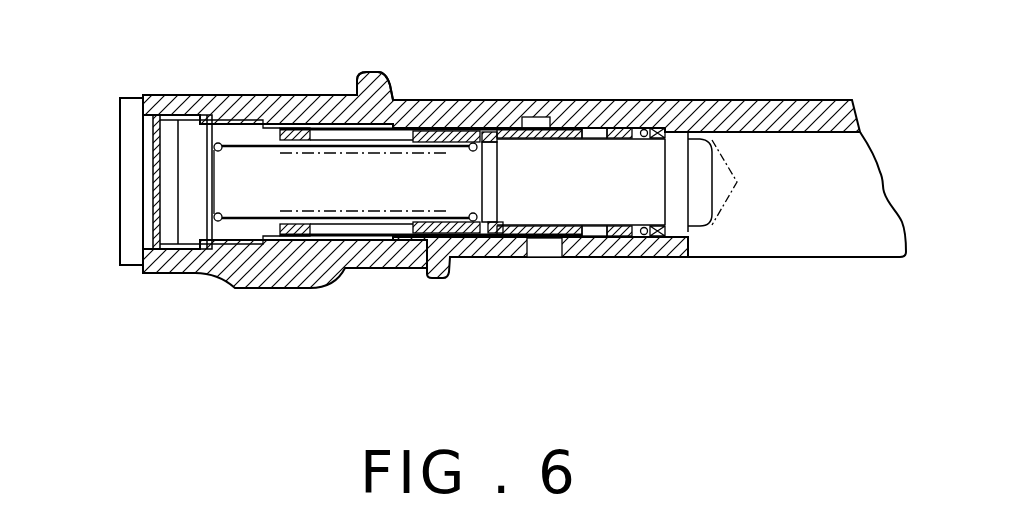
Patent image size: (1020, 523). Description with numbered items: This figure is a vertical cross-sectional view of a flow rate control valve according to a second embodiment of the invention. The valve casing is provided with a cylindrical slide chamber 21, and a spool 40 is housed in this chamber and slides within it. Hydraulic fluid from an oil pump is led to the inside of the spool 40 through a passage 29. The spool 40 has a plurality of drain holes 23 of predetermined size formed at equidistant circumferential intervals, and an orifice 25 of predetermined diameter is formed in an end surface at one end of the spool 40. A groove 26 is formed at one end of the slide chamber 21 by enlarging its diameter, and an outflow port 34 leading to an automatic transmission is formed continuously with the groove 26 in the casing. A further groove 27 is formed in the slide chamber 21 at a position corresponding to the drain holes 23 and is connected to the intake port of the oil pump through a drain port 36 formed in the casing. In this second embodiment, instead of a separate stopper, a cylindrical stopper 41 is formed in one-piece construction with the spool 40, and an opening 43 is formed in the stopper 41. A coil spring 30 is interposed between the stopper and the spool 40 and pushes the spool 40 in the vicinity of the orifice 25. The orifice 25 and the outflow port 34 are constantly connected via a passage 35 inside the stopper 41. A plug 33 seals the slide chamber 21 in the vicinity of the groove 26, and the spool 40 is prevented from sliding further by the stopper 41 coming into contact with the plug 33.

The slide chamber 21 is at (607, 140).
The drain holes 23 is at (613, 233).
The orifice 25 is at (487, 183).
The groove 26 is at (278, 250).
The groove 27 is at (558, 100).
The passage 29 is at (682, 148).
The coil spring 30 is at (373, 213).
The plug 33 is at (157, 200).
The outflow port 34 is at (337, 107).
The passage 35 is at (380, 197).
The drain port 36 is at (530, 257).
The spool 40 is at (500, 100).
The cylindrical stopper 41 is at (272, 110).
The opening 43 is at (347, 107).